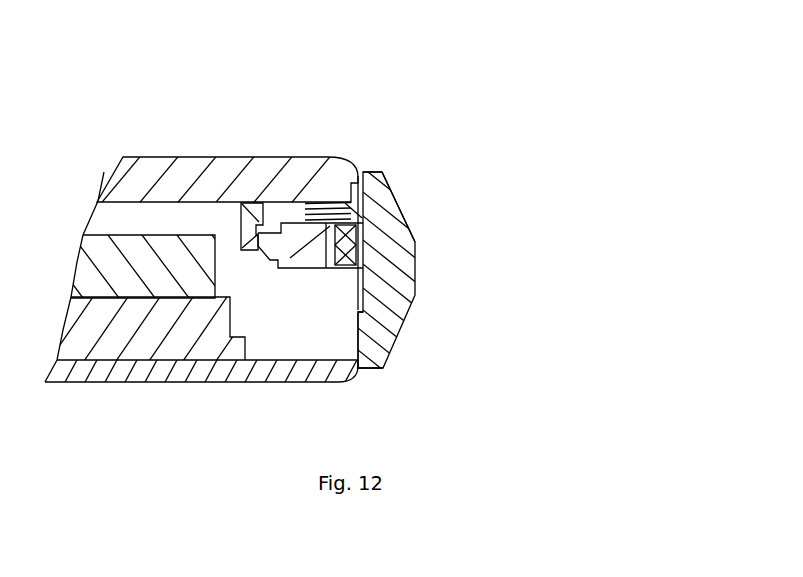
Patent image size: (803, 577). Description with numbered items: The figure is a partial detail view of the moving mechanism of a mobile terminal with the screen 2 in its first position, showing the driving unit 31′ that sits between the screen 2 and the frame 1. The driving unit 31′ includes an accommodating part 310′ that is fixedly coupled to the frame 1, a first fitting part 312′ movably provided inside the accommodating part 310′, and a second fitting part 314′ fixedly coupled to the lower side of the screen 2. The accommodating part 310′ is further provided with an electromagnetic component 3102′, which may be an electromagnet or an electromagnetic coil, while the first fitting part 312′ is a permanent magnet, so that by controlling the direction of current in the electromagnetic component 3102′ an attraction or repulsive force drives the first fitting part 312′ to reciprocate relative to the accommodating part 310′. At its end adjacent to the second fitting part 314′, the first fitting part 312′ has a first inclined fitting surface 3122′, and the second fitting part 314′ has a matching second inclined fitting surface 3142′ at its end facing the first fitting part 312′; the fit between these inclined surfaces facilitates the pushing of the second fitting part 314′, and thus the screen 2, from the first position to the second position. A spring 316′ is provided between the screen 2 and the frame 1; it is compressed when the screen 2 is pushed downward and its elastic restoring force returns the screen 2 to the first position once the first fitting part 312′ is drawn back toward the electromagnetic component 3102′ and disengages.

The frame 1 is at (408, 277).
The screen 2 is at (192, 168).
The driving unit 31′ is at (630, 46).
The second fitting part 314′ is at (330, 157).
The spring 316′ is at (373, 182).
The first fitting part 312′ is at (375, 213).
The accommodating part 310′ is at (362, 237).
The electromagnetic component 3102′ is at (406, 294).
The first inclined fitting surface 3122′ is at (272, 250).
The second inclined fitting surface 3142′ is at (248, 241).